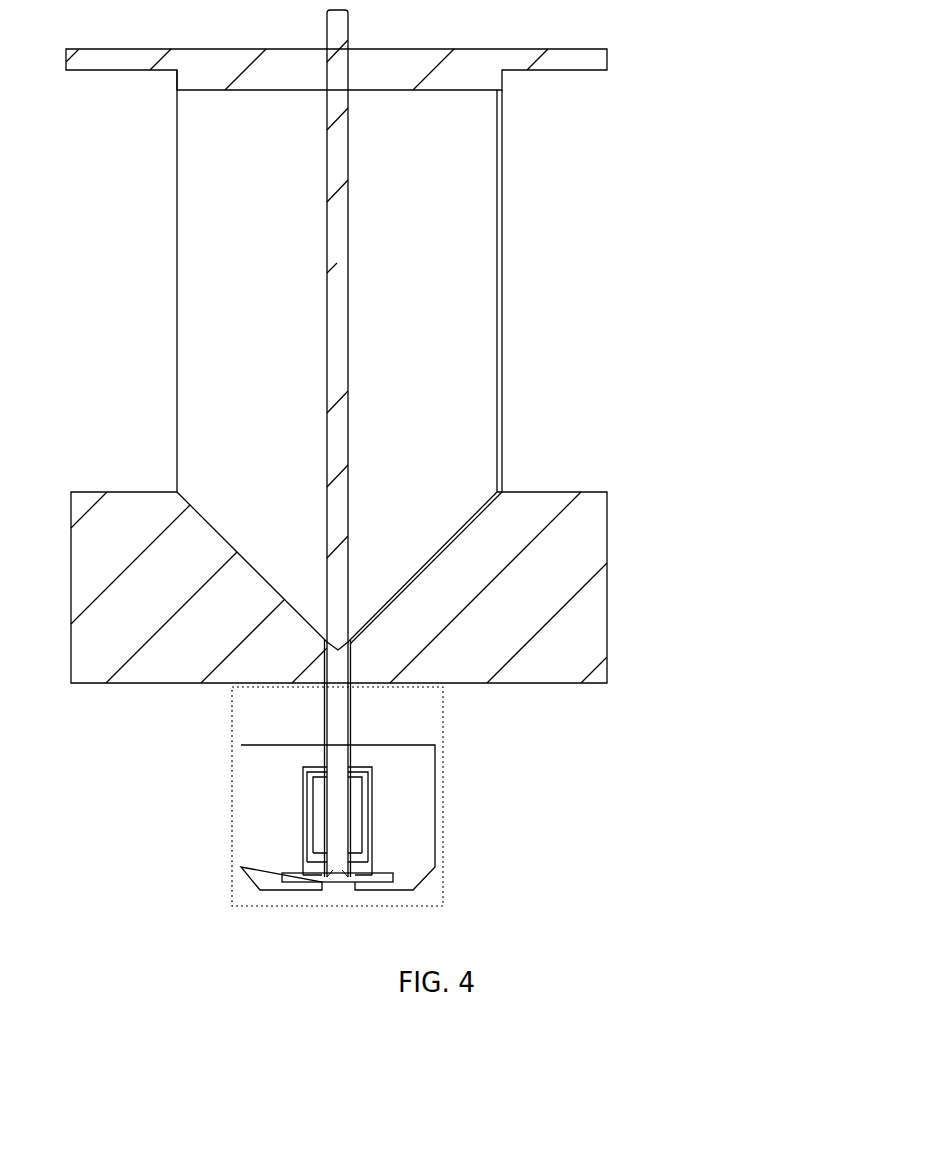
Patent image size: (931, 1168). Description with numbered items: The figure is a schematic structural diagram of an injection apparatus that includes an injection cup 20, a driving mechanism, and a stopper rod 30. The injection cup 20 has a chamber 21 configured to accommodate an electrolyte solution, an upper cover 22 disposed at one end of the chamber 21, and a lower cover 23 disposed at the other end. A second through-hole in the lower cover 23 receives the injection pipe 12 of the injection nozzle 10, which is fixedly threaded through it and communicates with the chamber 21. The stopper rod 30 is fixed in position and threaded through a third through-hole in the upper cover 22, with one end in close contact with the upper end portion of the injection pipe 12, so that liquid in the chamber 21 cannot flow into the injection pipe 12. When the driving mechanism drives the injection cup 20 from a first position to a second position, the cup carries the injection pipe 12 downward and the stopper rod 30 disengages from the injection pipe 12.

The injection nozzle 10 is at (443, 815).
The injection pipe 12 is at (327, 703).
The injection cup 20 is at (436, 366).
The chamber 21 is at (503, 275).
The upper cover 22 is at (599, 64).
The lower cover 23 is at (593, 505).
The stopper rod 30 is at (327, 375).